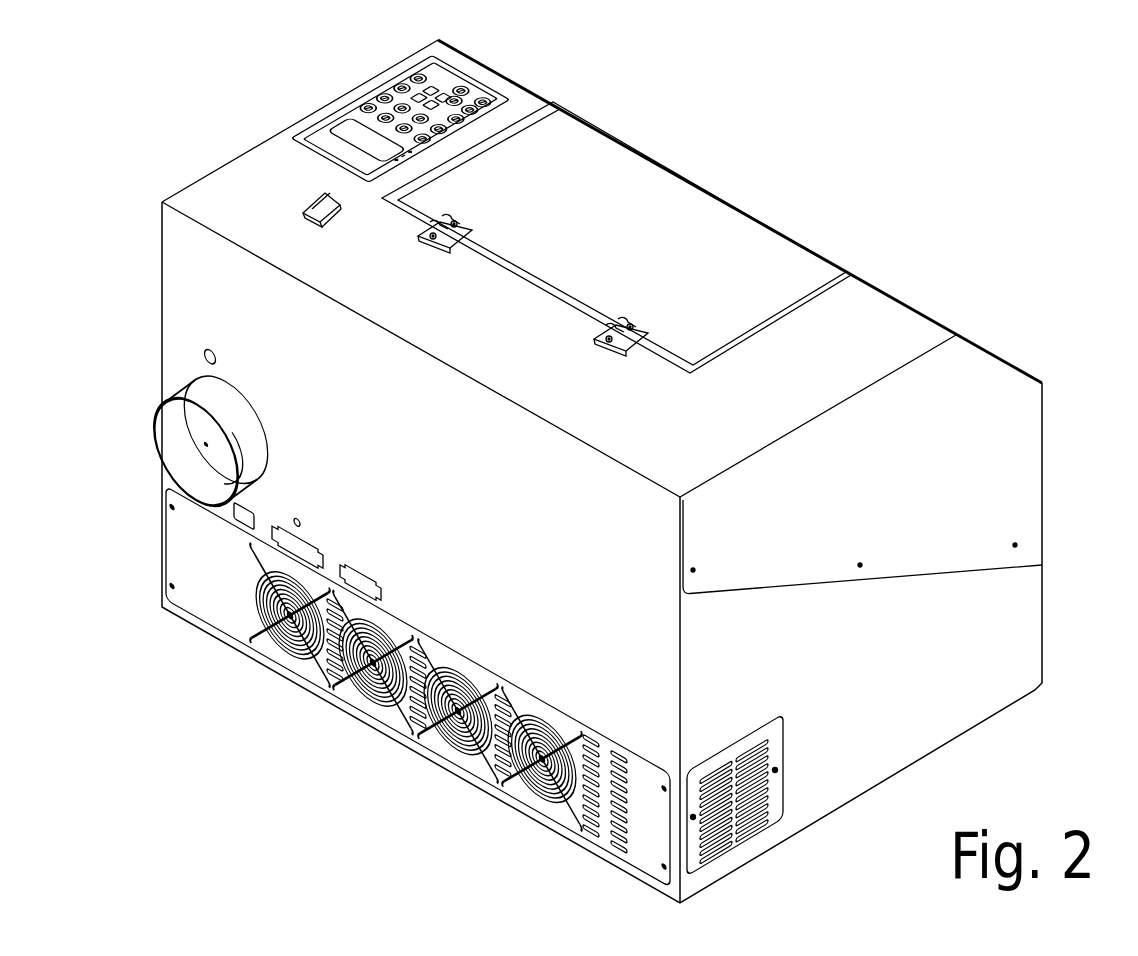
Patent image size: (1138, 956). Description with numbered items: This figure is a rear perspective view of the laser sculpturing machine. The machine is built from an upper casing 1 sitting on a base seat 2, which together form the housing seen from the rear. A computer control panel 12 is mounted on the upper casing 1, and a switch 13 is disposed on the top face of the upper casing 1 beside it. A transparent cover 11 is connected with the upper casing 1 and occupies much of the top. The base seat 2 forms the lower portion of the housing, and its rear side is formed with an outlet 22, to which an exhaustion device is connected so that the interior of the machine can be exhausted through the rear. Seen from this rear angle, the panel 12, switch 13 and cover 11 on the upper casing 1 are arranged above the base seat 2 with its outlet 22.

The upper casing 1 is at (910, 325).
The transparent cover 11 is at (592, 158).
The computer control panel 12 is at (353, 113).
The switch 13 is at (318, 210).
The base seat 2 is at (1018, 621).
The outlet 22 is at (177, 446).